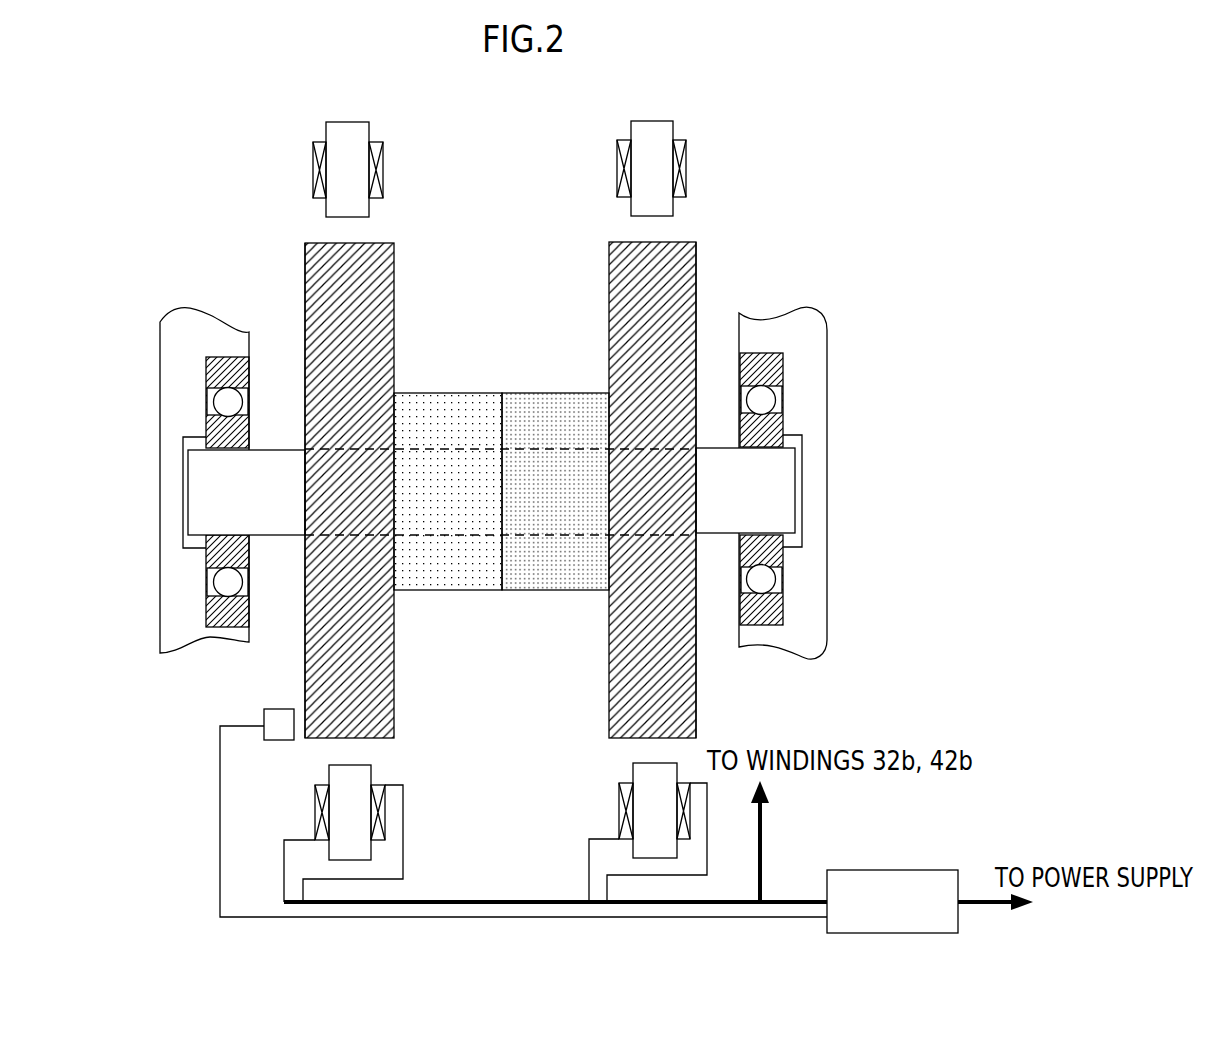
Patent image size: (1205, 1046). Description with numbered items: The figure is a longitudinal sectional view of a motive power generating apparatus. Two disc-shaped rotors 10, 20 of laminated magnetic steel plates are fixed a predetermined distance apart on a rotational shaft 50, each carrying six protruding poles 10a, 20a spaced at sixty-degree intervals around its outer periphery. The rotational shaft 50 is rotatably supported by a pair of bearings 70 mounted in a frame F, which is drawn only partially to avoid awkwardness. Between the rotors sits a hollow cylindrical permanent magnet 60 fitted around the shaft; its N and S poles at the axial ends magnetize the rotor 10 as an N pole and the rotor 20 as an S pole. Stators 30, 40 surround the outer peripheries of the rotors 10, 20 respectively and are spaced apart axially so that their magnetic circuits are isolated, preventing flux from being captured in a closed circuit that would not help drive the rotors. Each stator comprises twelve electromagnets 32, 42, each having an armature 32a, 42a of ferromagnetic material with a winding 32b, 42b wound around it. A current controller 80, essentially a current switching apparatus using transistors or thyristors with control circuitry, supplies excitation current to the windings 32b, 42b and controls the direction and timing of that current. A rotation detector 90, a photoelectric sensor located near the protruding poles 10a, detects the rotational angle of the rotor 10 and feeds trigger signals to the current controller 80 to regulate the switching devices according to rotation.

The rotor 10 is at (287, 307).
The protruding pole 10a is at (317, 270).
The rotor 20 is at (709, 280).
The protruding pole 20a is at (697, 260).
The stator 30 is at (299, 154).
The electromagnet 32 is at (349, 154).
The armature 32a is at (343, 137).
The winding 32b is at (315, 168).
The stator 40 is at (783, 152).
The electromagnet 42 is at (732, 152).
The armature 42a is at (660, 130).
The winding 42b is at (688, 175).
The rotational shaft 50 is at (727, 500).
The permanent magnet 60 is at (510, 356).
The bearing 70 is at (780, 378).
The frame F is at (813, 425).
The current controller 80 is at (927, 883).
The rotation detector 90 is at (280, 725).